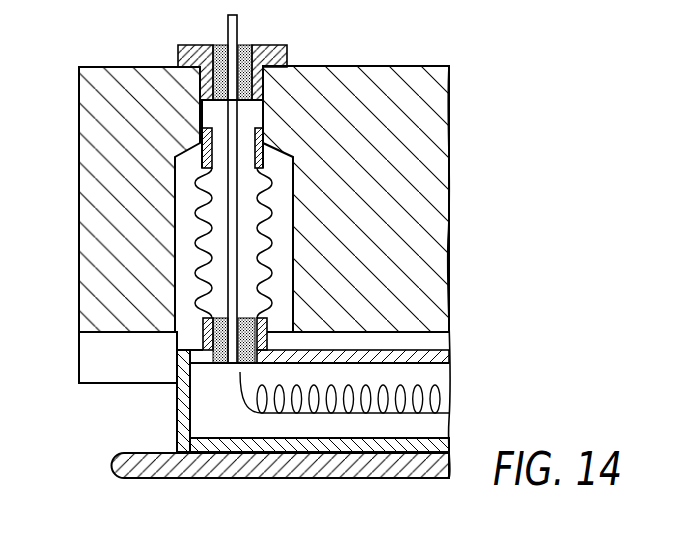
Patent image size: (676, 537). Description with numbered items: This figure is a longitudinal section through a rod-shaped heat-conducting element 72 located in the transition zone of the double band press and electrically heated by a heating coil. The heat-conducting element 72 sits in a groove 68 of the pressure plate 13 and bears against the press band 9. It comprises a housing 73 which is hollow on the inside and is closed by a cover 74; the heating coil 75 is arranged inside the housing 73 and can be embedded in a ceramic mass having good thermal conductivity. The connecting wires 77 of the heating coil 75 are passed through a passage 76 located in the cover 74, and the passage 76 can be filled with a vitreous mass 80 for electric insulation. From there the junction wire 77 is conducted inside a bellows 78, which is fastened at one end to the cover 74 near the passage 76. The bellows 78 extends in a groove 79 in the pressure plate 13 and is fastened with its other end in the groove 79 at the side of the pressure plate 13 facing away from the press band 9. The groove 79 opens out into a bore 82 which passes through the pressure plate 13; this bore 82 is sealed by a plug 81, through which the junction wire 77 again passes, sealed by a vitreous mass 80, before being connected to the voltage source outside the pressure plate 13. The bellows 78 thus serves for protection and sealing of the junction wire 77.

The press band 9 is at (285, 467).
The pressure plate 13 is at (120, 90).
The groove 68 is at (108, 357).
The heat-conducting element 72 is at (422, 373).
The housing 73 is at (363, 452).
The cover 74 is at (423, 347).
The heating coil 75 is at (422, 396).
The passage 76 is at (223, 373).
The connecting wires 77 is at (232, 288).
The bellows 78 is at (272, 266).
The groove 79 is at (281, 211).
The vitreous mass 80 is at (242, 47).
The plug 81 is at (272, 55).
The bore 82 is at (250, 123).